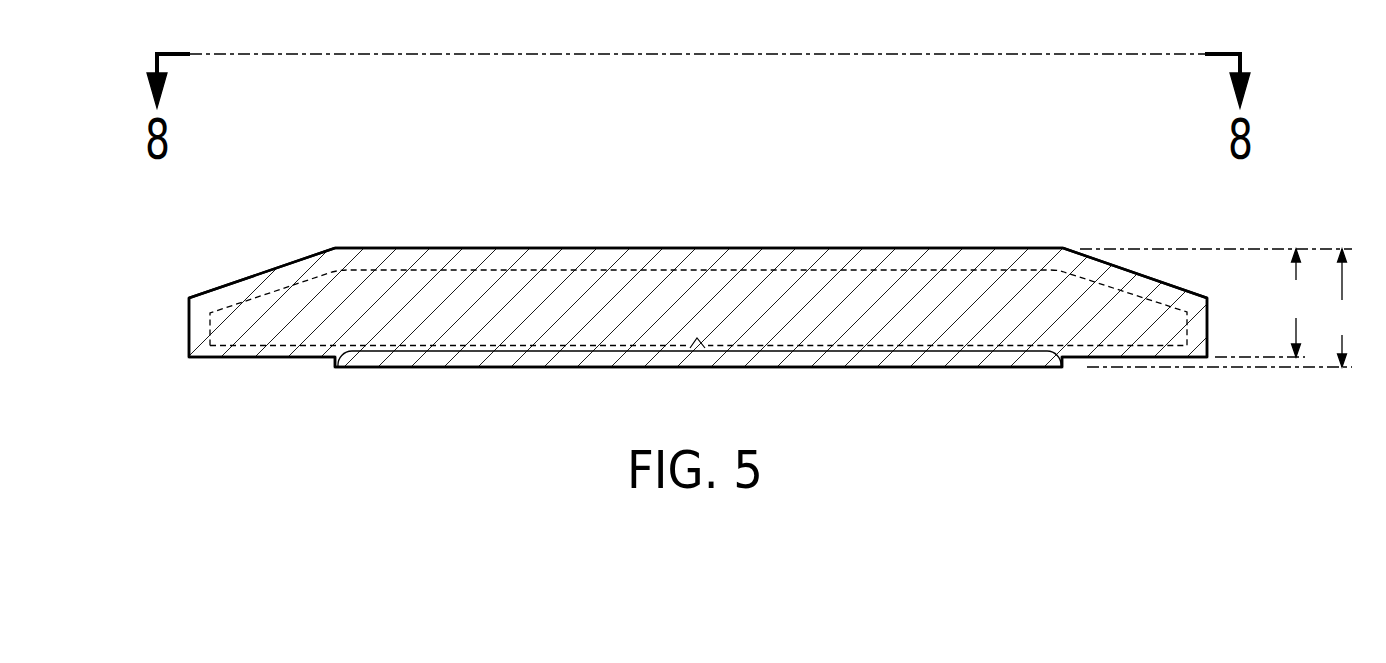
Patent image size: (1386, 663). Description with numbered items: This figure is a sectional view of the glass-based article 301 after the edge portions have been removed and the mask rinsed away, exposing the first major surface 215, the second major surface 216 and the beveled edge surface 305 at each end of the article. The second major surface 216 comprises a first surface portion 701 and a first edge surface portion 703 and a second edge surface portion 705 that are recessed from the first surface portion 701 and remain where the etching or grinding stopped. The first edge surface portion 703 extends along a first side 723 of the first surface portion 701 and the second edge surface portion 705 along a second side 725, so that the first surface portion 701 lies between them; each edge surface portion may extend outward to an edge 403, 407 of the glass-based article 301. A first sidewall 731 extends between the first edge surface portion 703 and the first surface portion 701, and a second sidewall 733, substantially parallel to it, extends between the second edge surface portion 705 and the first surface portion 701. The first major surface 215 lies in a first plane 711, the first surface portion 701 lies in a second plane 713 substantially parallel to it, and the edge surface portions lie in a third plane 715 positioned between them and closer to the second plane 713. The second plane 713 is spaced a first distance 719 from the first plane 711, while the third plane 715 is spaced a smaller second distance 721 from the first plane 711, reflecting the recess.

The first major surface 215 is at (580, 248).
The second major surface 216 is at (582, 367).
The glass-based article 301 is at (1047, 182).
The beveled edge surface 305 is at (297, 260).
The edge 403 is at (189, 328).
The edge 407 is at (1209, 327).
The first surface portion 701 is at (753, 307).
The first edge surface portion 703 is at (230, 357).
The second edge surface portion 705 is at (1167, 358).
The first plane 711 is at (1240, 249).
The second plane 713 is at (1293, 368).
The third plane 715 is at (1237, 358).
The first distance 719 is at (1343, 308).
The second distance 721 is at (1296, 303).
The first side 723 is at (325, 363).
The second side 725 is at (1078, 366).
The first sidewall 731 is at (327, 366).
The second sidewall 733 is at (1067, 362).